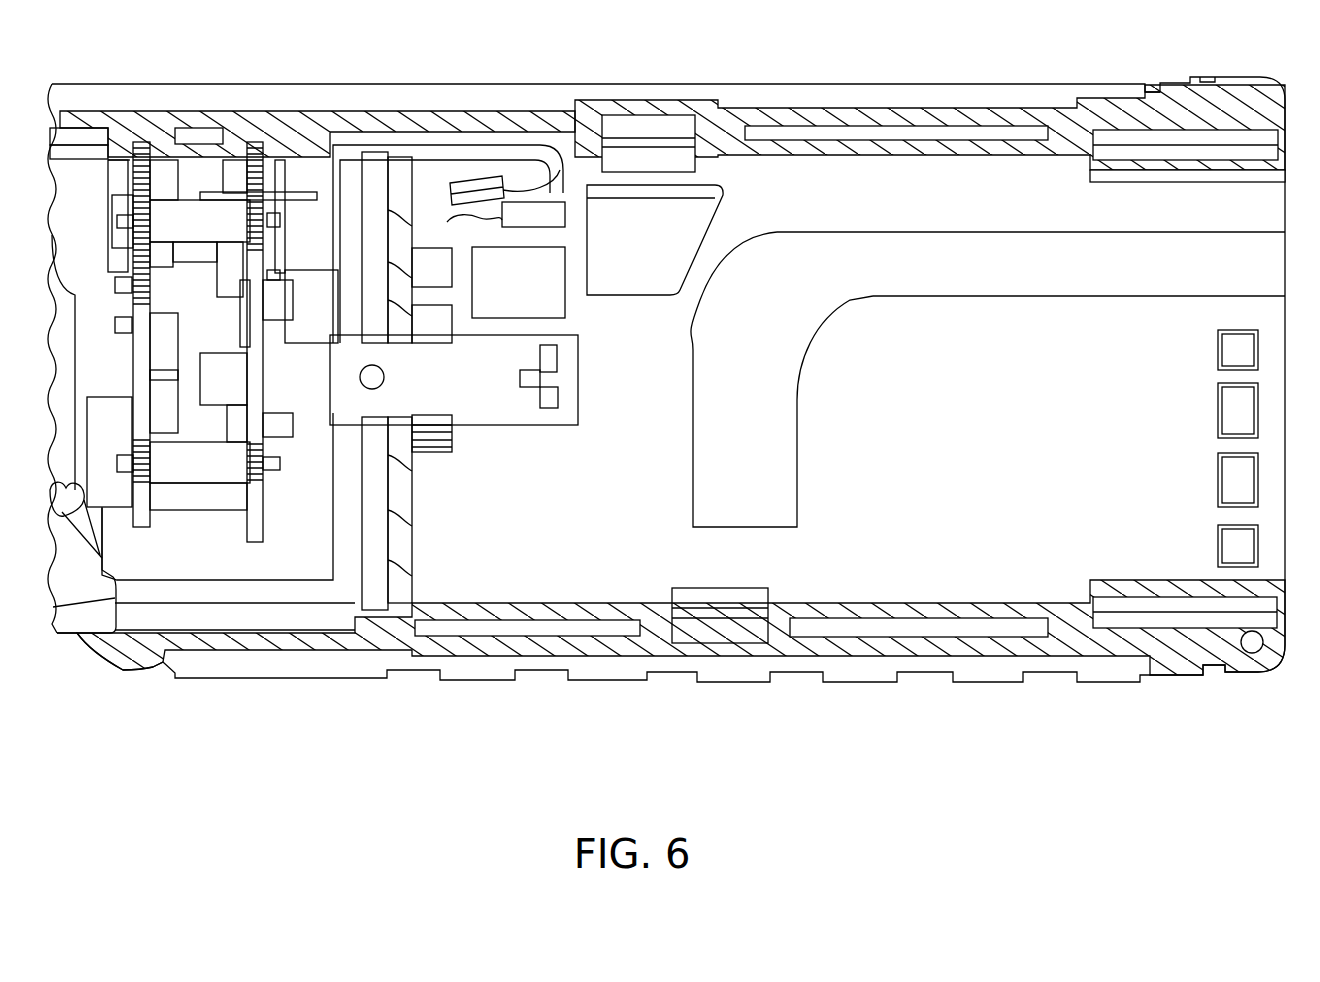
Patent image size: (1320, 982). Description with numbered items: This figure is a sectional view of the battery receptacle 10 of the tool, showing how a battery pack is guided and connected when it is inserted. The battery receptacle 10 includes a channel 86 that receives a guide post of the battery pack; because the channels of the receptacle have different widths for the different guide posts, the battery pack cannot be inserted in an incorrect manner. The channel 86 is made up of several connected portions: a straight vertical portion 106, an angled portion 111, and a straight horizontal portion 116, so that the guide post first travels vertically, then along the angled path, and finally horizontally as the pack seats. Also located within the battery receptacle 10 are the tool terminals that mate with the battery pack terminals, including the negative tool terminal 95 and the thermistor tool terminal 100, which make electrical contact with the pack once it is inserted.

The battery receptacle 10 is at (1301, 622).
The channel 86 is at (1178, 273).
The negative tool terminal 95 is at (487, 383).
The thermistor tool terminal 100 is at (487, 178).
The straight vertical portion 106 is at (967, 260).
The angled portion 111 is at (780, 267).
The straight horizontal portion 116 is at (748, 452).